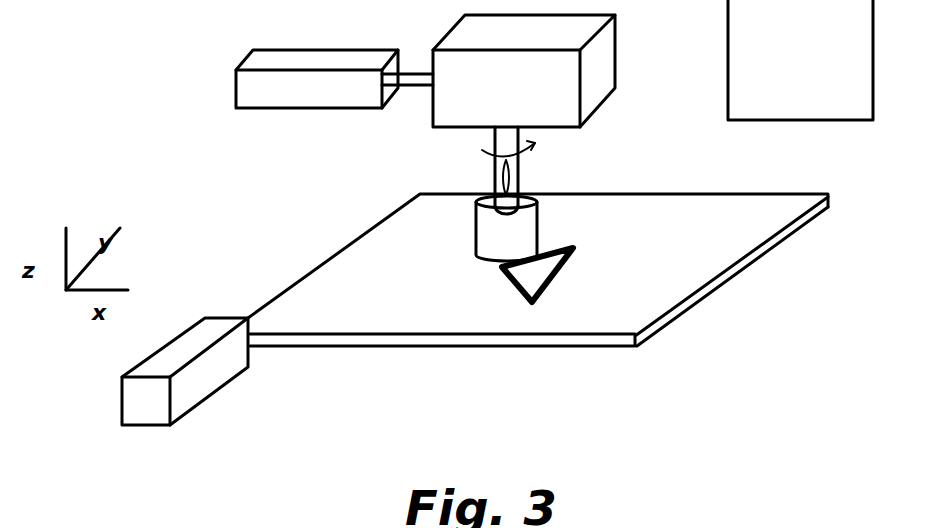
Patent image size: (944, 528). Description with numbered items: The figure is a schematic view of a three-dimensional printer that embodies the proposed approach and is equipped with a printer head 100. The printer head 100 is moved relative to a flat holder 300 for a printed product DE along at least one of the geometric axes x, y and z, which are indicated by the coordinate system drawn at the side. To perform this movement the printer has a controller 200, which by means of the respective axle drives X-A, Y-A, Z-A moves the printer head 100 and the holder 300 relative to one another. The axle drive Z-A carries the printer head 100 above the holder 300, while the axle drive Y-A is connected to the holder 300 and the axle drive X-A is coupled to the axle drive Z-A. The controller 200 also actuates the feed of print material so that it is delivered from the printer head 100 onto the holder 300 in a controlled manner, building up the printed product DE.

The 3D printer head 100 is at (478, 228).
The controller 200 is at (800, 60).
The flat holder 300 is at (538, 270).
The printed product DE is at (545, 287).
The axle drive X-A is at (334, 104).
The axle drive Y-A is at (190, 377).
The axle drive Z-A is at (524, 114).